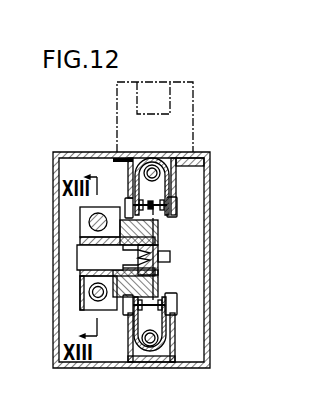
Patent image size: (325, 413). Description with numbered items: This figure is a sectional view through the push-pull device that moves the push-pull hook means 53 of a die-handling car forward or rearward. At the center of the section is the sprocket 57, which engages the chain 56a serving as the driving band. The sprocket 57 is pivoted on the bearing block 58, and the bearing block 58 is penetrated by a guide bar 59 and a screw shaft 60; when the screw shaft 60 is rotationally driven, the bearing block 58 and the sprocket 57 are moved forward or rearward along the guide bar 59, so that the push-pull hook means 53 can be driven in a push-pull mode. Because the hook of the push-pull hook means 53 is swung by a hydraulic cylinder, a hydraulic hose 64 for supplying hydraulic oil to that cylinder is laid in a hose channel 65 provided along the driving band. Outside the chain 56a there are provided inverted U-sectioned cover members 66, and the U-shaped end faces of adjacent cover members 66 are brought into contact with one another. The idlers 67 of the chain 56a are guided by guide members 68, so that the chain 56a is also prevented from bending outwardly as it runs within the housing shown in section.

The push-pull hook means 53 is at (160, 83).
The chain 56a is at (176, 205).
The sprocket 57 is at (143, 230).
The bearing block 58 is at (80, 292).
The guide bar 59 is at (80, 222).
The screw shaft 60 is at (82, 297).
The hydraulic hose 64 is at (158, 160).
The hose channel 65 is at (172, 190).
The cover member 66 is at (143, 360).
The idler 67 is at (170, 302).
The guide member 68 is at (176, 172).